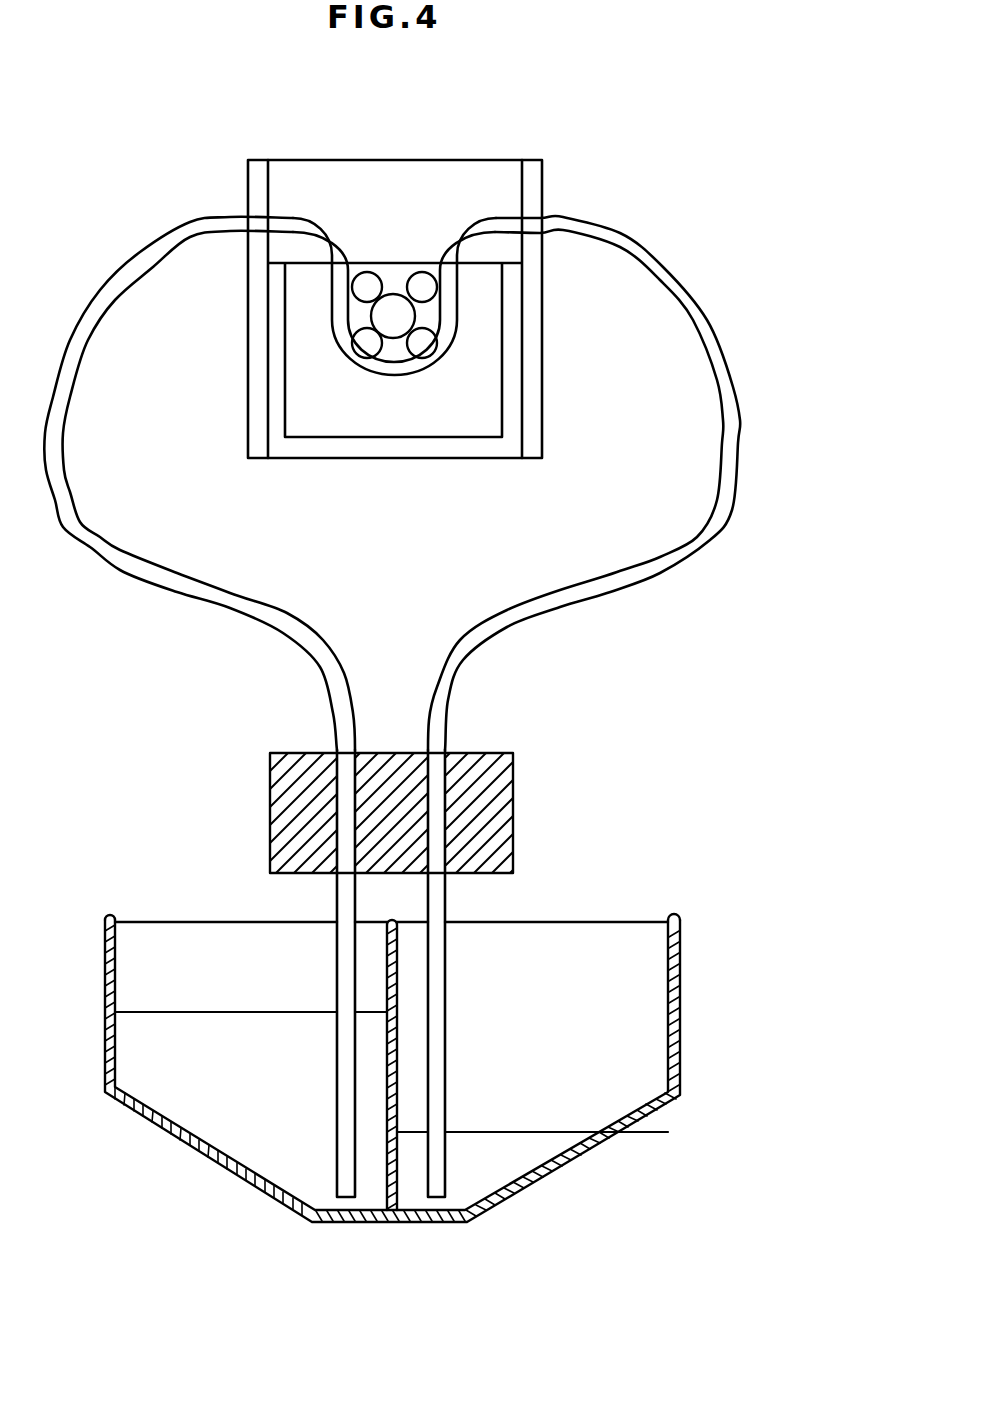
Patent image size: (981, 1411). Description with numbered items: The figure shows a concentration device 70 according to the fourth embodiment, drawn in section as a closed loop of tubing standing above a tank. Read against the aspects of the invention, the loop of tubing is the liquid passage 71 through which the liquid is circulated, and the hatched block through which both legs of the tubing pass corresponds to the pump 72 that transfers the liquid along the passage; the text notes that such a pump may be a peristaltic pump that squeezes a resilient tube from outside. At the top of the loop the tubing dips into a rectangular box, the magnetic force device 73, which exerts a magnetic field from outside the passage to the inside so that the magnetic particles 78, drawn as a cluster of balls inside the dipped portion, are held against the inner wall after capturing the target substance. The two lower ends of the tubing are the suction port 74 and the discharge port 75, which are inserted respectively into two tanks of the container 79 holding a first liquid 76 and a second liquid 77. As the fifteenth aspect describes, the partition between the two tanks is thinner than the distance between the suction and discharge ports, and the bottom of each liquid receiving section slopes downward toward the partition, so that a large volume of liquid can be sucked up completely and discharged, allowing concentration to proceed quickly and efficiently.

The concentration device 70 is at (677, 253).
The loop tube 71 is at (133, 252).
The heating block 72 is at (497, 810).
The container 73 is at (395, 265).
The first tube end 74 is at (343, 1202).
The second tube end 75 is at (435, 1202).
The first liquid 76 is at (145, 962).
The second liquid 77 is at (637, 1000).
The balls 78 is at (422, 343).
The tank 79 is at (682, 1060).